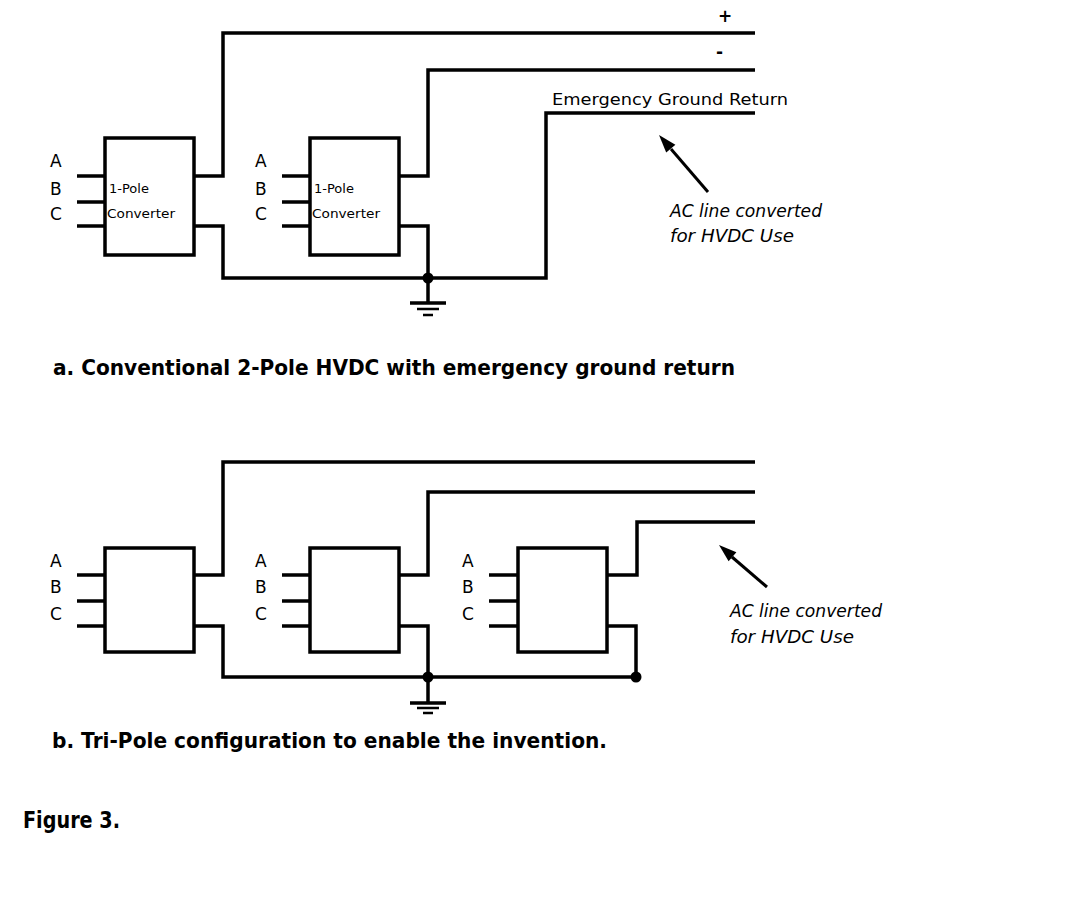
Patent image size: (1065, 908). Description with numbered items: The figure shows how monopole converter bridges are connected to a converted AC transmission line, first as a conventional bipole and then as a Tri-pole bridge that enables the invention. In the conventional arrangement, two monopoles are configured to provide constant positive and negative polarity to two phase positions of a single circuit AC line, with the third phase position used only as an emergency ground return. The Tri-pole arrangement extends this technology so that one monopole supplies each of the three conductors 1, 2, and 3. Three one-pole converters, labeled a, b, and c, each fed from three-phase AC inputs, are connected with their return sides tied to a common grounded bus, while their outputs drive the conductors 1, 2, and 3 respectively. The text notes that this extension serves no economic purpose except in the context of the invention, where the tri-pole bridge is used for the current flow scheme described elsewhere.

The conductor 1 is at (474, 506).
The conductor 2 is at (577, 521).
The conductor 3 is at (681, 536).
The first 1-pole converter a is at (135, 588).
The second 1-pole converter b is at (340, 588).
The third 1-pole converter c is at (548, 588).